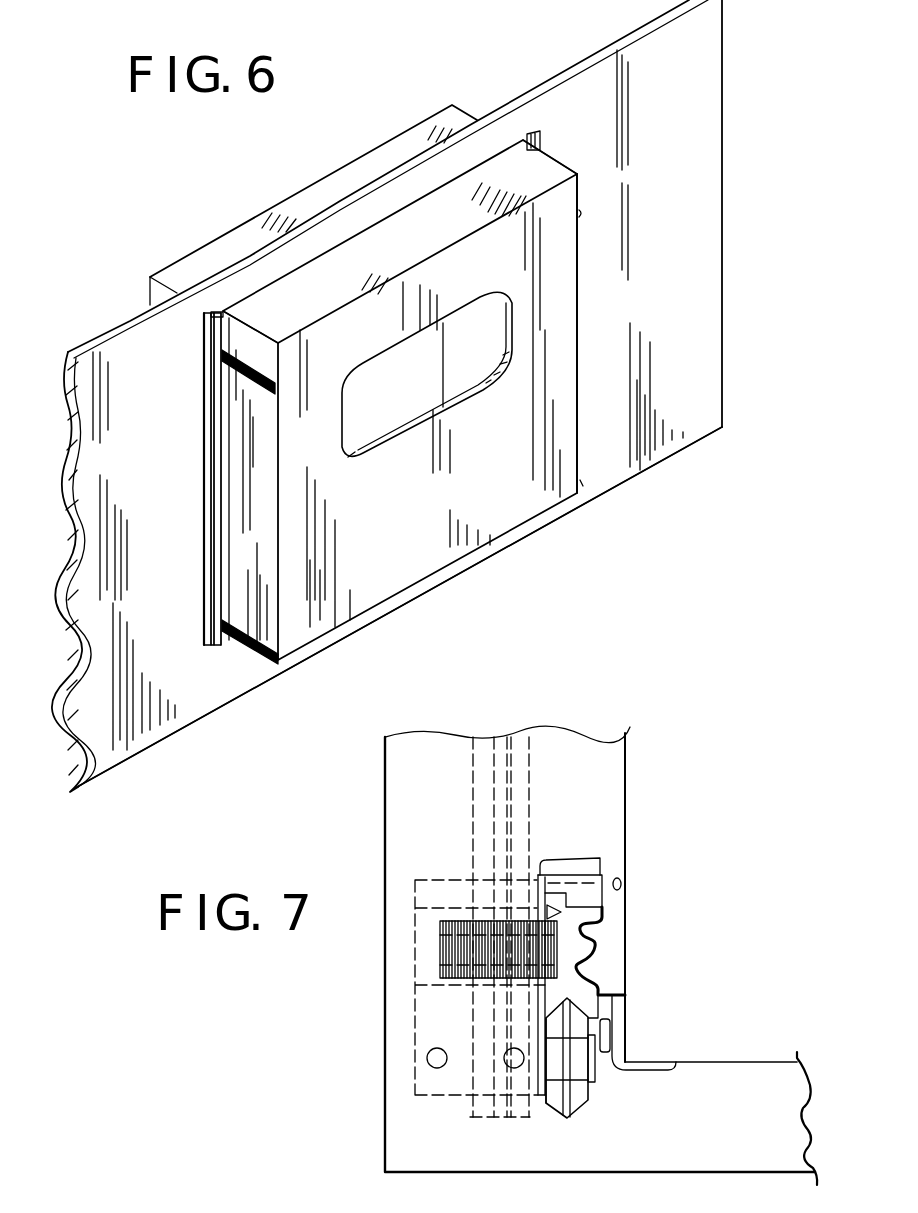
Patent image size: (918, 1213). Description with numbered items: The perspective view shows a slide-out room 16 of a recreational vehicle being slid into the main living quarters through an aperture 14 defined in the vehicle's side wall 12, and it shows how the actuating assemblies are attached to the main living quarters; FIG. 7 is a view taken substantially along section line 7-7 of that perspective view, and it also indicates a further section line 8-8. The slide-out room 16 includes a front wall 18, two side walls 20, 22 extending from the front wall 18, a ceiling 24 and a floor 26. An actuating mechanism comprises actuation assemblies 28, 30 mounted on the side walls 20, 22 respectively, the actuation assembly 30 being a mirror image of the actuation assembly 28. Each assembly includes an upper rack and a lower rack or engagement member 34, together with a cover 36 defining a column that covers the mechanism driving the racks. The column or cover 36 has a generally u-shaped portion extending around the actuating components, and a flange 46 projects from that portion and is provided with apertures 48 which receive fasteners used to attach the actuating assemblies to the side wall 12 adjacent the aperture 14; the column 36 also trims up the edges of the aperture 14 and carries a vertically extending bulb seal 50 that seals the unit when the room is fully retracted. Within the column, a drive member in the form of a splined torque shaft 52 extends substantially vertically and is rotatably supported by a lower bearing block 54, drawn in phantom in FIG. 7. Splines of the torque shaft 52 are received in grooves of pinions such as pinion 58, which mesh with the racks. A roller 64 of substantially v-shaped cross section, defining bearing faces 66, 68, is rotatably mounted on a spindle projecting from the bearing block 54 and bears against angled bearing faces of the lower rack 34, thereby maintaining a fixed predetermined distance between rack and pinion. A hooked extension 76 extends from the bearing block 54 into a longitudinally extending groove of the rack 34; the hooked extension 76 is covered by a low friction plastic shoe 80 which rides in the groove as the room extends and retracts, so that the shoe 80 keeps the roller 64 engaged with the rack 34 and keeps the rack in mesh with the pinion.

In FIG. 6, the section line 7- 7 is at (292, 708).
In FIG. 7, the section line 8- 8 is at (673, 974).
In FIG. 6, the side wall 12 is at (80, 661).
In FIG. 6, the aperture 14 is at (305, 258).
In FIG. 7, the slide-out room 16 is at (748, 1036).
In FIG. 6, the front wall 18 is at (425, 509).
In FIG. 6, the side wall 20 is at (243, 565).
In FIG. 6, the side wall 22 is at (580, 344).
In FIG. 7, the side wall 22 is at (627, 790).
In FIG. 6, the ceiling 24 is at (437, 235).
In FIG. 6, the floor 26 is at (430, 578).
In FIG. 6, the actuation assembly 28 is at (235, 652).
In FIG. 6, the actuation assembly 30 is at (550, 148).
In FIG. 7, the lower rack or engagement member 34 is at (575, 972).
In FIG. 6, the cover or column 36 is at (206, 401).
In FIG. 6, the flange 46 is at (208, 500).
In FIG. 6, the apertures 48 is at (208, 450).
In FIG. 6, the bulb seal 50 is at (221, 343).
In FIG. 7, the splined torque shaft 52 is at (503, 758).
In FIG. 7, the lower bearing block 54 is at (442, 1083).
In FIG. 7, the pinion 58 is at (445, 948).
In FIG. 7, the roller 64 is at (588, 1130).
In FIG. 7, the bearing face 66 is at (578, 1093).
In FIG. 7, the bearing face 68 is at (553, 1097).
In FIG. 7, the hooked extension 76 is at (620, 886).
In FIG. 7, the shoe 80 is at (600, 871).